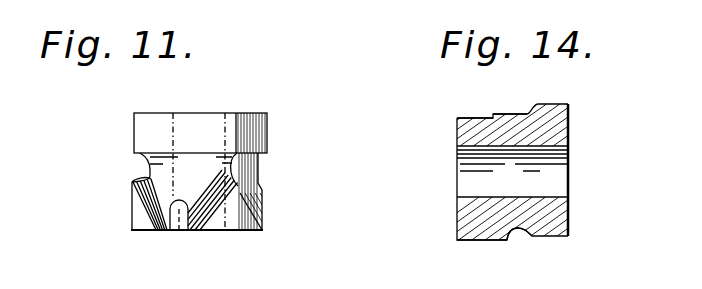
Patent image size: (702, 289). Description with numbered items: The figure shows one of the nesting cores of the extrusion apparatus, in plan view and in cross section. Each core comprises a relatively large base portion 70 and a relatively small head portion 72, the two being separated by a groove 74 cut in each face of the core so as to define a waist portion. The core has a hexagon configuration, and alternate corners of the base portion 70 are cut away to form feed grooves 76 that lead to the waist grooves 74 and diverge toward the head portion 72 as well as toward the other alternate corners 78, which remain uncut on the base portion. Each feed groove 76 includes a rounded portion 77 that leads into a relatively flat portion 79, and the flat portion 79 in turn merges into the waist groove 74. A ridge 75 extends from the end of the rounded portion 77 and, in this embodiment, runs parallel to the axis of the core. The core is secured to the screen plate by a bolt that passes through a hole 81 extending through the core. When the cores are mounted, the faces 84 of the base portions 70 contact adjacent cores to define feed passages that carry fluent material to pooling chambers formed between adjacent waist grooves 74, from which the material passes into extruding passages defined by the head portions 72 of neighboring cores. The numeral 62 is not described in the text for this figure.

In FIG. 11, the body 62 is at (132, 202).
In FIG. 14, the body 62 is at (457, 132).
In FIG. 11, the base portion 70 is at (133, 233).
In FIG. 14, the base portion 70 is at (457, 228).
In FIG. 11, the head portion 72 is at (272, 137).
In FIG. 14, the head portion 72 is at (571, 127).
In FIG. 11, the groove 74 is at (257, 167).
In FIG. 14, the groove 74 is at (517, 240).
In FIG. 11, the ridge 75 is at (179, 192).
In FIG. 14, the ridge 75 is at (515, 114).
In FIG. 11, the feed groove 76 is at (180, 233).
In FIG. 14, the feed groove 76 is at (468, 118).
In FIG. 11, the rounded portion 77 is at (168, 233).
In FIG. 11, the alternate corner 78 is at (257, 232).
In FIG. 14, the alternate corner 78 is at (482, 240).
In FIG. 11, the relatively flat portion 79 is at (140, 178).
In FIG. 14, the hole 81 is at (483, 187).
In FIG. 11, the face 84 is at (216, 233).